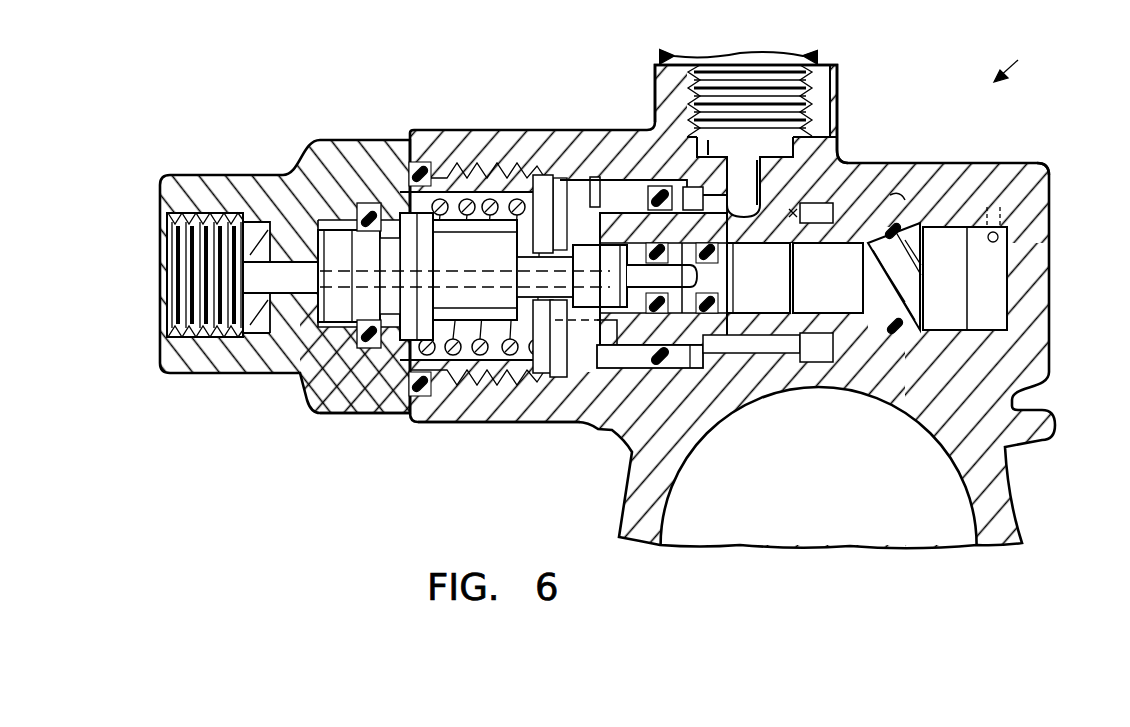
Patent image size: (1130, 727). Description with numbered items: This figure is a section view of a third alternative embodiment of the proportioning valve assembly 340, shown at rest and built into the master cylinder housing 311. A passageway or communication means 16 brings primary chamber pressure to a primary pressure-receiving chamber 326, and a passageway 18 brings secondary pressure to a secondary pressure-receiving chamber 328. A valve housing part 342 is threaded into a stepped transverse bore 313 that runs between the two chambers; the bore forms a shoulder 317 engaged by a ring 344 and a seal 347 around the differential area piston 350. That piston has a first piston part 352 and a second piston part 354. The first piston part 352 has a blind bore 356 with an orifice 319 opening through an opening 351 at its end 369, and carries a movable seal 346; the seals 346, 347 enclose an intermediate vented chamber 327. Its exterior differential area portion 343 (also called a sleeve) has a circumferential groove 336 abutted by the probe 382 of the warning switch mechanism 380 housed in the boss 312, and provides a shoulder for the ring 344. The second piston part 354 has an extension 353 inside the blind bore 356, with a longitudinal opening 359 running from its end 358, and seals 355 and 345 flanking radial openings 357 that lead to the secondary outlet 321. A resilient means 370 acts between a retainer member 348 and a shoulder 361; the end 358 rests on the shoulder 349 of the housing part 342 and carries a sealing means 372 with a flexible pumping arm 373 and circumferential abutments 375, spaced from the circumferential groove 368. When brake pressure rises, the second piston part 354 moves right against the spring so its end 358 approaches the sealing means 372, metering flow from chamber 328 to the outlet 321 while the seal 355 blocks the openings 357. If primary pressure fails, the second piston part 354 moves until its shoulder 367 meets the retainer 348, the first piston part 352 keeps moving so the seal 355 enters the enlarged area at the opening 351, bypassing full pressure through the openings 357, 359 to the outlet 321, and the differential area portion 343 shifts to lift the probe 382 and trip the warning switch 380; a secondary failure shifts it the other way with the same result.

The passageway or communication means 16 is at (1007, 237).
The passageway or communication means 18 is at (572, 380).
The master cylinder housing 311 is at (1050, 380).
The housing boss 312 is at (827, 68).
The transverse bore 313 is at (604, 190).
The shoulder 317 is at (718, 170).
The orifice 319 is at (858, 315).
The secondary outlet 321 is at (178, 284).
The primary pressure-receiving chamber 326 is at (997, 257).
The intermediate vented chamber 327 is at (897, 193).
The secondary pressure-receiving chamber 328 is at (497, 420).
The circumferential groove 336 is at (838, 165).
The proportioning valve assembly 340 is at (1021, 59).
The valve housing part 342 is at (198, 175).
The exterior differential area portion 343 is at (797, 197).
The ring 344 is at (688, 190).
The seal 345 is at (753, 367).
The movable seal 346 is at (953, 190).
The seal 347 is at (655, 188).
The retainer member 348 is at (593, 193).
The shoulder 349 is at (335, 242).
The differential area piston 350 is at (985, 307).
The opening 351 is at (652, 352).
The first piston part 352 is at (917, 290).
The extension 353 is at (587, 190).
The second piston part 354 is at (478, 195).
The seal 355 is at (710, 357).
The blind bore 356 is at (833, 335).
The radial openings 357 is at (733, 282).
The end 358 is at (330, 230).
The longitudinal opening 359 is at (543, 173).
The shoulder 361 is at (395, 213).
The shoulder 367 is at (500, 195).
The circumferential groove 368 is at (363, 300).
The end 369 is at (610, 335).
The resilient means 370 is at (453, 220).
The sealing means 372 is at (319, 413).
The flexible pumping arm 373 is at (362, 350).
The circumferential abutments 375 is at (365, 210).
The warning switch mechanism 380 is at (760, 73).
The probe 382 is at (830, 127).